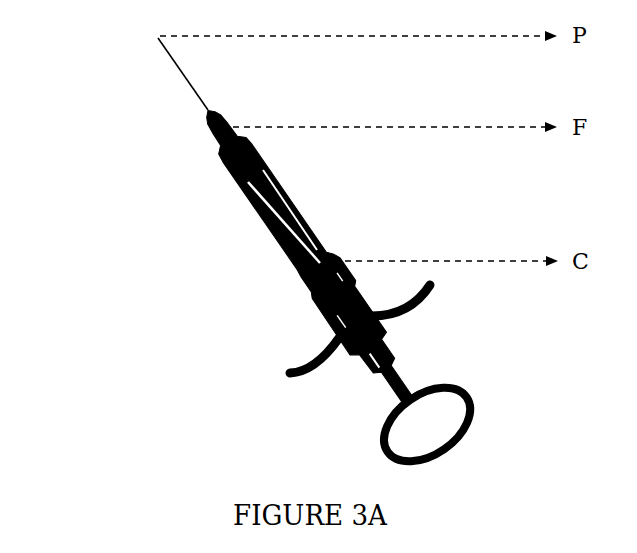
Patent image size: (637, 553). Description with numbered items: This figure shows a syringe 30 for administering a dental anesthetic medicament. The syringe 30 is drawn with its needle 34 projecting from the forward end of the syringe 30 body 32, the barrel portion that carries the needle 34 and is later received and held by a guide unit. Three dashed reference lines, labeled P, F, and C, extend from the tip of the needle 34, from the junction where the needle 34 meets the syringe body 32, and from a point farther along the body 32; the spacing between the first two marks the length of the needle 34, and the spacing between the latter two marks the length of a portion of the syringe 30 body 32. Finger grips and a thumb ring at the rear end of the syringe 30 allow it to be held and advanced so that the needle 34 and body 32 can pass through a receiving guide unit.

The syringe 30 is at (262, 257).
The syringe body / barrel 32 is at (282, 242).
The needle 34 is at (185, 84).